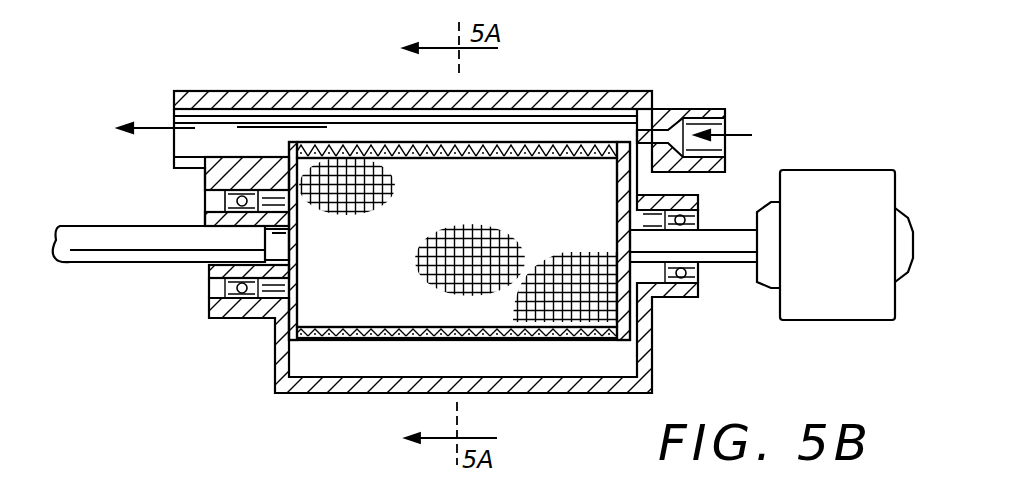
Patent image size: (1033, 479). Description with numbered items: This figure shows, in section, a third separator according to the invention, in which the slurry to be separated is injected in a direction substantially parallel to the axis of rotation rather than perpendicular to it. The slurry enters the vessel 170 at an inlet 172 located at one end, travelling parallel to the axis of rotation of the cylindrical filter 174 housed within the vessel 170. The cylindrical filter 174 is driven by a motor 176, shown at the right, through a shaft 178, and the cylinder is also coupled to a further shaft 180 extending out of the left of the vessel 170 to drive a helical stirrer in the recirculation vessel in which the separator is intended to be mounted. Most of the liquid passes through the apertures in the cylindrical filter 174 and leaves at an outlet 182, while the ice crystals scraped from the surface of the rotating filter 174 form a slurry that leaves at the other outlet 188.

The vessel 170 is at (604, 92).
The inlet 172 is at (718, 108).
The cylindrical filter 174 is at (500, 201).
The motor 176 is at (860, 170).
The shaft 178 is at (728, 248).
The further shaft 180 is at (176, 266).
The outlet 182 is at (207, 214).
The outlet 188 is at (213, 110).